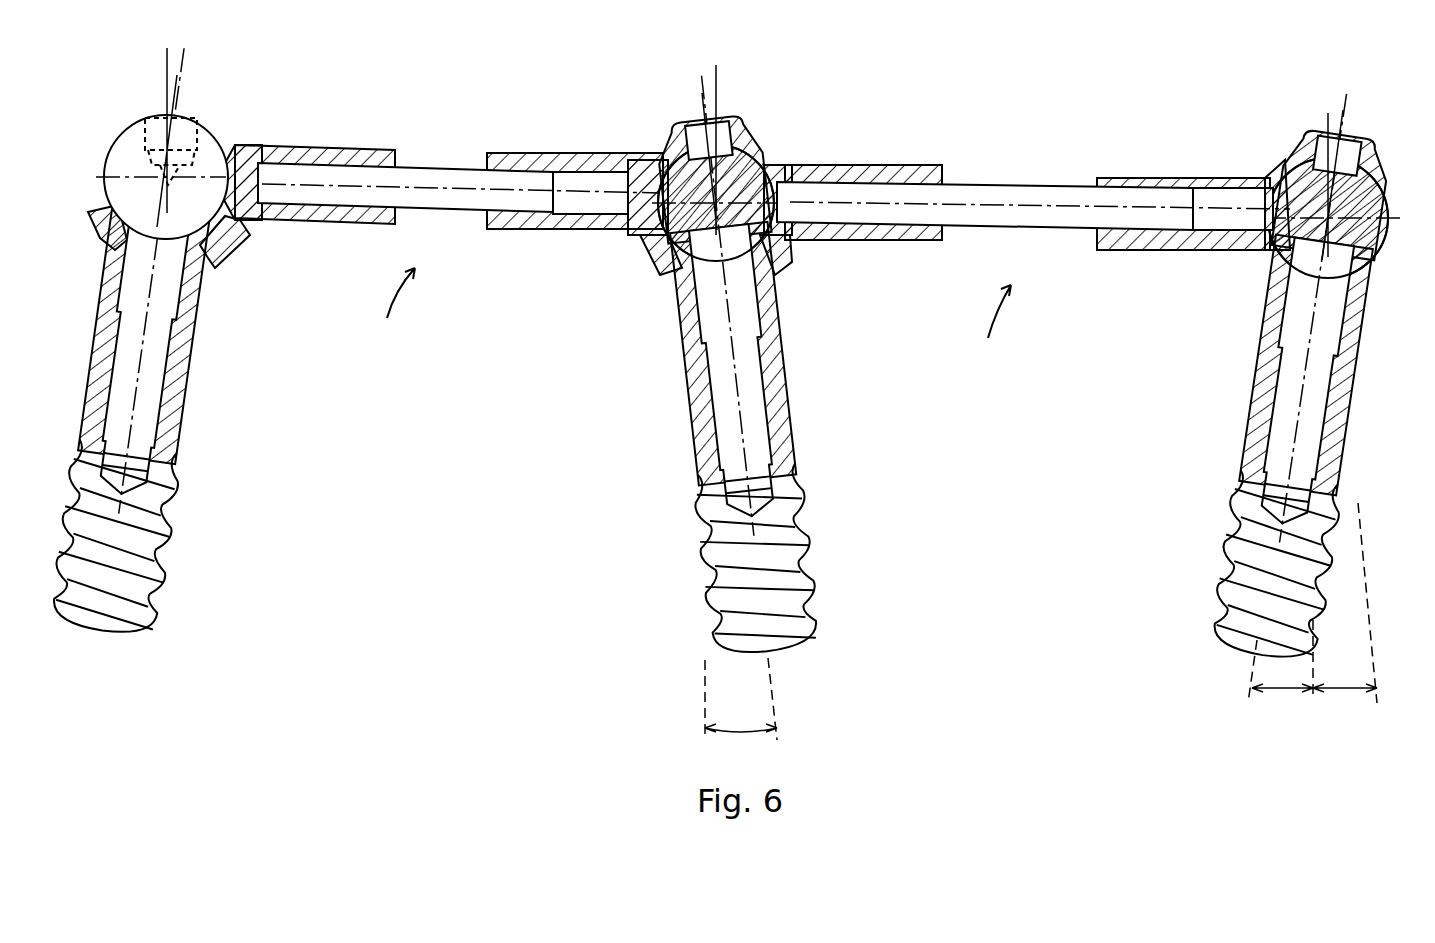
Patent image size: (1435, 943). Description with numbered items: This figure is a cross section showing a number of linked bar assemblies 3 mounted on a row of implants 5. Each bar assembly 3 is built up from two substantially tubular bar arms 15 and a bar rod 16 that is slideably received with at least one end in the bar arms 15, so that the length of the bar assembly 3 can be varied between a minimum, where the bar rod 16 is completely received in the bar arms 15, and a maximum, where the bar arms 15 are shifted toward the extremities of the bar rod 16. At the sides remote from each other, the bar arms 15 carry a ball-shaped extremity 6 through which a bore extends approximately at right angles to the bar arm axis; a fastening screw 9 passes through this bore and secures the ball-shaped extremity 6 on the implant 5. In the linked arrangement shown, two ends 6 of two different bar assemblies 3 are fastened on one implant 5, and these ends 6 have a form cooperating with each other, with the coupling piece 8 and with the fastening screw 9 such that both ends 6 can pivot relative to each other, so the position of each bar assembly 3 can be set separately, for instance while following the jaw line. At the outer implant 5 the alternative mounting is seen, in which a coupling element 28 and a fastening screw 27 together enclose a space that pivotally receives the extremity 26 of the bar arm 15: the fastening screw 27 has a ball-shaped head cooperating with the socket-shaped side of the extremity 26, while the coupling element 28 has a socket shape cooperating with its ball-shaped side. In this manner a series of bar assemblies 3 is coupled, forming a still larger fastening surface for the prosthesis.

The bar assembly 3 is at (695, 320).
The implant 5 is at (175, 432).
The ball-shaped extremity 6 is at (760, 165).
The coupling piece 8 is at (1265, 292).
The fastening screw 9 is at (735, 128).
The bar arm 15 is at (565, 155).
The bar rod 16 is at (425, 180).
The extremity of bar arm 26 is at (663, 250).
The fastening screw 27 is at (130, 140).
The coupling element 28 is at (676, 306).